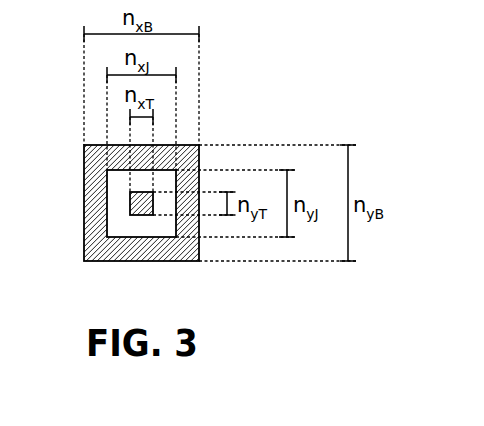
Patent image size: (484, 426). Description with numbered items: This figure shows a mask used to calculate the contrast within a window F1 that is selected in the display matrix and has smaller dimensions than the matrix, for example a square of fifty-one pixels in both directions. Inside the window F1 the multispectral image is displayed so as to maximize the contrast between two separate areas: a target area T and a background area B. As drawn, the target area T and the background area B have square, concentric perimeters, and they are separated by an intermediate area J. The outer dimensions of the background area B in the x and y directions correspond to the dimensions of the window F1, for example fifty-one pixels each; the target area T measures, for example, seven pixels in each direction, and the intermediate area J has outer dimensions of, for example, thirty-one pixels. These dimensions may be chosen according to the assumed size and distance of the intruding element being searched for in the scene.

The background area B is at (92, 187).
The intermediate area J is at (162, 227).
The target area T is at (142, 210).
The window F1 is at (84, 236).